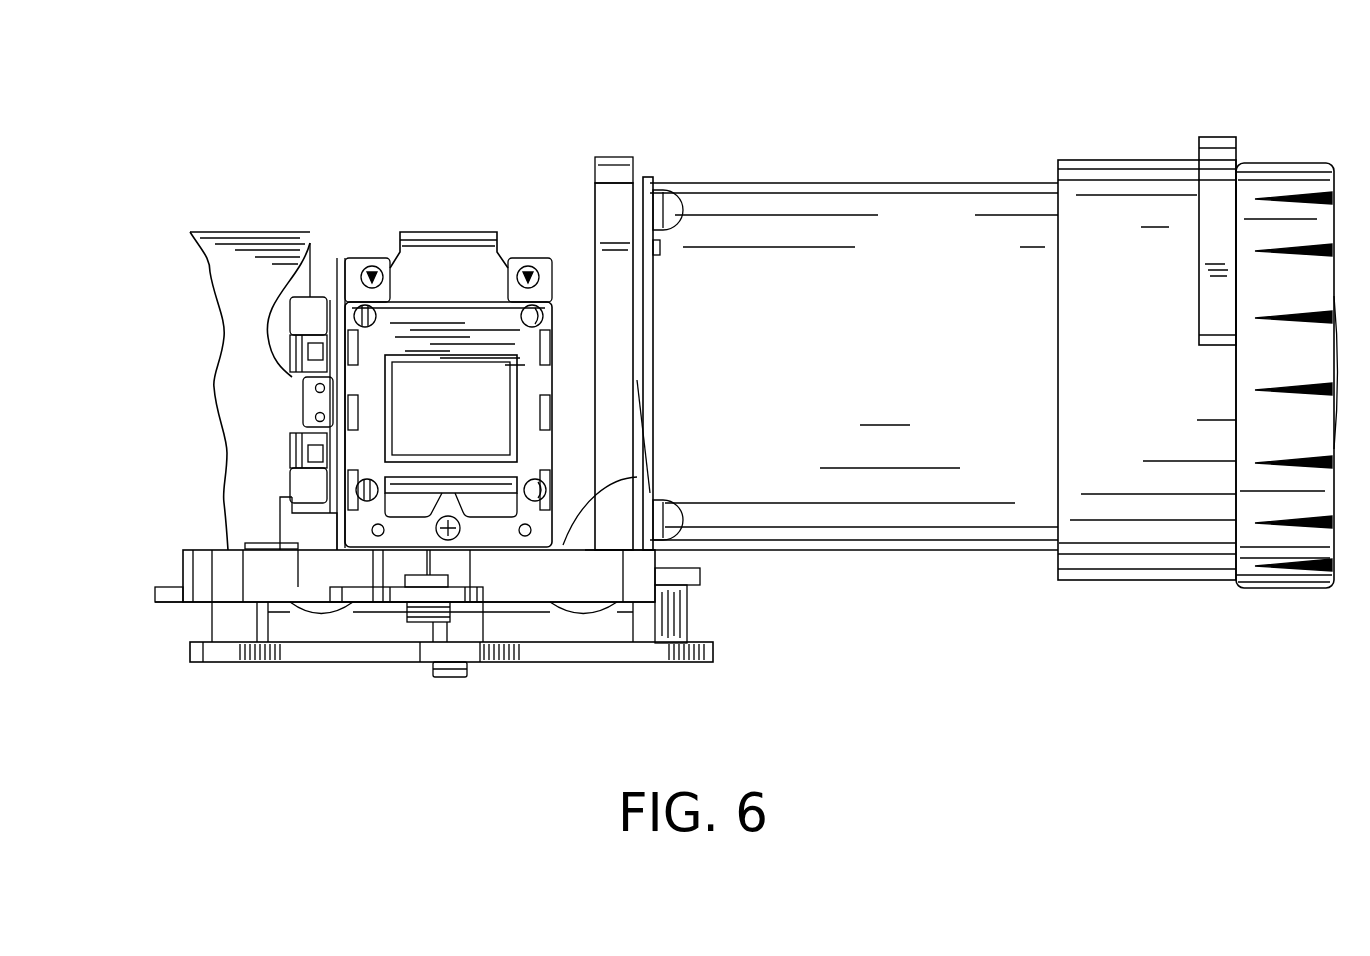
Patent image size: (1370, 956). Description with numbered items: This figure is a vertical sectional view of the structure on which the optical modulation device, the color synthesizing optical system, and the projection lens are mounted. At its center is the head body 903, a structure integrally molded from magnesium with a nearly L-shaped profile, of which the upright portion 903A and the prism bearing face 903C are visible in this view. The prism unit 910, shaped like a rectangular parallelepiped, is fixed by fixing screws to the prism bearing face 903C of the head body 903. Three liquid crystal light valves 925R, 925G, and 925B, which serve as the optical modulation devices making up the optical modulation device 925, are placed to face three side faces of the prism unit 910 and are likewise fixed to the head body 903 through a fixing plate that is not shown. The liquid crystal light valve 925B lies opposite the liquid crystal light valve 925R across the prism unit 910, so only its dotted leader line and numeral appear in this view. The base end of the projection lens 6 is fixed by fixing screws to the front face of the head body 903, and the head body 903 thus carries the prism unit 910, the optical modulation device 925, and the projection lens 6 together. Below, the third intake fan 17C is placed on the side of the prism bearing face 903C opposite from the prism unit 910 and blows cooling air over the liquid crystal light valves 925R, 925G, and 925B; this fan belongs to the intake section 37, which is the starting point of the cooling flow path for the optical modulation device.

The projection lens 6 is at (922, 208).
The head body 903 is at (686, 308).
The bracket upper portion 903A is at (590, 372).
The prism bearing face 903C is at (565, 542).
The prism unit 910 is at (415, 287).
The optical modulation device 925 is at (408, 277).
The liquid crystal light valve 925G is at (307, 233).
The liquid crystal light valve 925R is at (413, 375).
The liquid crystal light valve 925B is at (469, 300).
The intake section 37 is at (434, 669).
The third intake fan 17C is at (560, 662).